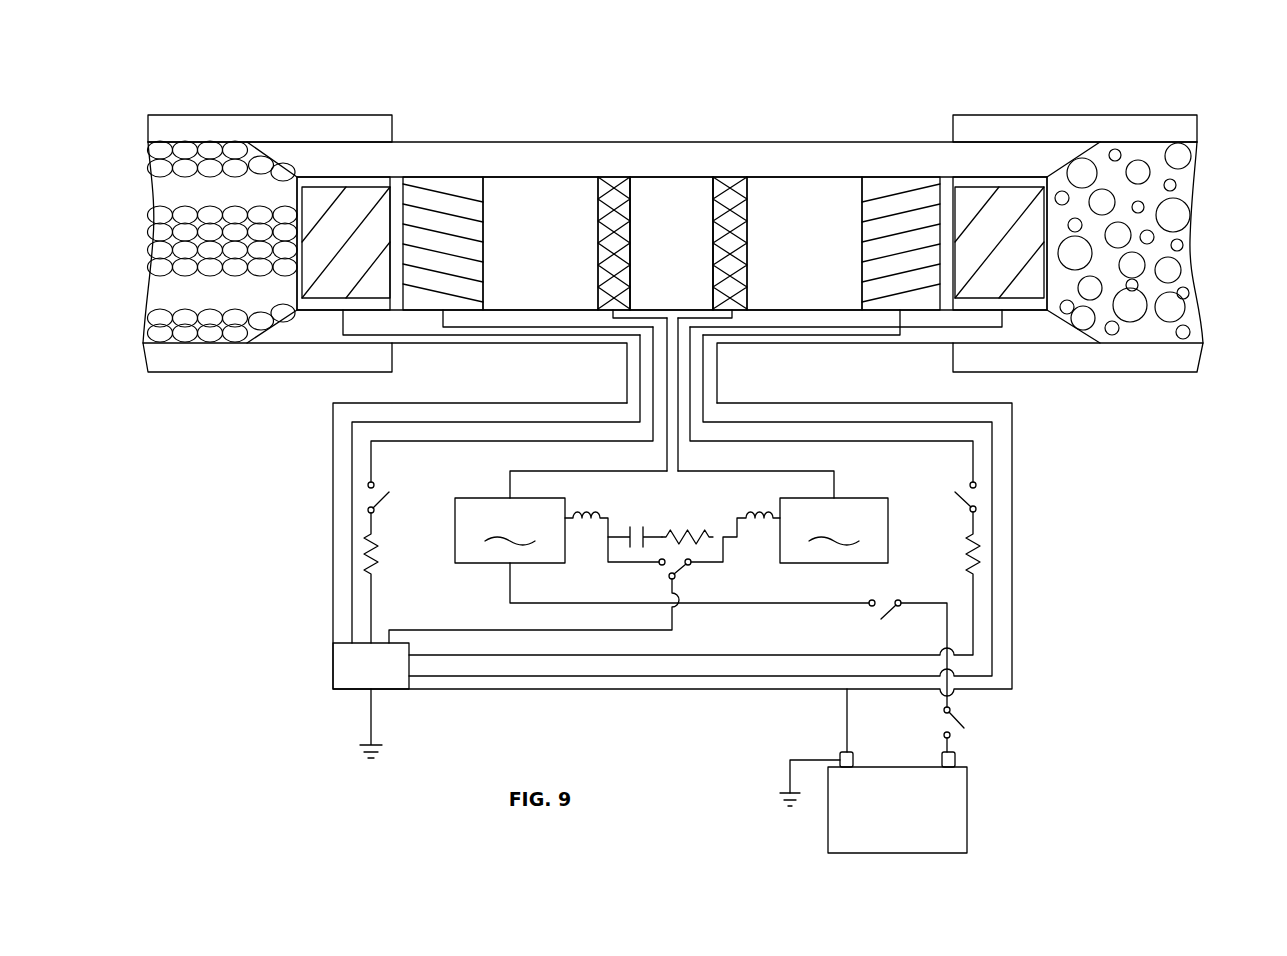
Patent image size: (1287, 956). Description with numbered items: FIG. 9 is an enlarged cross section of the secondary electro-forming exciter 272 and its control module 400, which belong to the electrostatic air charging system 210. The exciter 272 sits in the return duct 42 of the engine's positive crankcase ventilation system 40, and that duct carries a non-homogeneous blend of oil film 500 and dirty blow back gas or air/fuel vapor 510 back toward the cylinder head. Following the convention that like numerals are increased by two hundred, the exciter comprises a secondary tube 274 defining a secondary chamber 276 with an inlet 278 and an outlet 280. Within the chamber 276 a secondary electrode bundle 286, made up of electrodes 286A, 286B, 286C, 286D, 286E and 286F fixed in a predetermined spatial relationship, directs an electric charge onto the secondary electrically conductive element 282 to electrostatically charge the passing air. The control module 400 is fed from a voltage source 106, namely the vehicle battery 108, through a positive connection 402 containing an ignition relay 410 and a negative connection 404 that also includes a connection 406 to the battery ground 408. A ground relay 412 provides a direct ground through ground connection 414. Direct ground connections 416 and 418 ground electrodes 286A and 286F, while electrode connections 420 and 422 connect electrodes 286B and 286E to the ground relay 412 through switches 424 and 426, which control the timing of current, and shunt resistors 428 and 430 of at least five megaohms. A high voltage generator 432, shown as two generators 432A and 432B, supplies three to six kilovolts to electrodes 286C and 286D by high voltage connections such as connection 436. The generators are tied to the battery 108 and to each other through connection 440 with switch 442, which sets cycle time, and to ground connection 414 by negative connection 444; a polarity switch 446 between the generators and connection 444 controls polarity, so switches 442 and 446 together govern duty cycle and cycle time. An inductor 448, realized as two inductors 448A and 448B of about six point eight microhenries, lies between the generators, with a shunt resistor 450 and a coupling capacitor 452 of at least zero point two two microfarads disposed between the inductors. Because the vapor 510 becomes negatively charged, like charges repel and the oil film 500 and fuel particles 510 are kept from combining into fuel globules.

The positive crankcase ventilation system 40 is at (165, 373).
The return duct 42 is at (128, 366).
The voltage source 106 is at (958, 773).
The battery 108 is at (895, 767).
The electrostatic air charging system 210 is at (618, 538).
The secondary electro-forming exciter 272 is at (668, 218).
The secondary tube 274 is at (722, 178).
The secondary chamber 276 is at (800, 190).
The inlet 278 is at (1049, 283).
The outlet 280 is at (296, 197).
The secondary electrically conductive element 282 is at (670, 178).
The secondary electrode bundle 286 is at (672, 155).
The secondary electrode 286A is at (338, 185).
The secondary electrode 286B is at (445, 178).
The secondary electrode 286C is at (613, 178).
The secondary electrode 286D is at (760, 178).
The secondary electrode 286E is at (900, 178).
The secondary electrode 286F is at (1000, 190).
The electric voltage source control module 400 is at (703, 585).
The positive connection 402 is at (951, 710).
The negative connection 404 is at (847, 718).
The connection to battery ground 406 is at (790, 778).
The battery ground 408 is at (790, 800).
The ignition relay 410 is at (951, 735).
The ground relay 412 is at (350, 668).
The ground connection 414 is at (370, 720).
The direct ground connection 416 is at (350, 607).
The direct ground connection 418 is at (993, 657).
The electrode connection 420 is at (370, 455).
The electrode connection 422 is at (975, 458).
The switch 424 is at (367, 484).
The switch 426 is at (976, 485).
The resistor 428 is at (364, 536).
The resistor 430 is at (976, 542).
The high voltage generator 432 is at (642, 520).
The high voltage generator 432A is at (510, 530).
The high voltage generator 432B is at (834, 530).
The high voltage connection 436 is at (525, 471).
The connection 440 is at (922, 601).
The switch 442 is at (898, 607).
The negative connection 444 is at (463, 629).
The polarity switch 446 is at (677, 579).
The inductor 448 is at (673, 535).
The inductor 448A is at (587, 527).
The inductor 448B is at (760, 527).
The resistor 450 is at (696, 527).
The capacitor 452 is at (654, 532).
The oil film 500 is at (160, 217).
The dirty blow back gas 510 is at (160, 152).